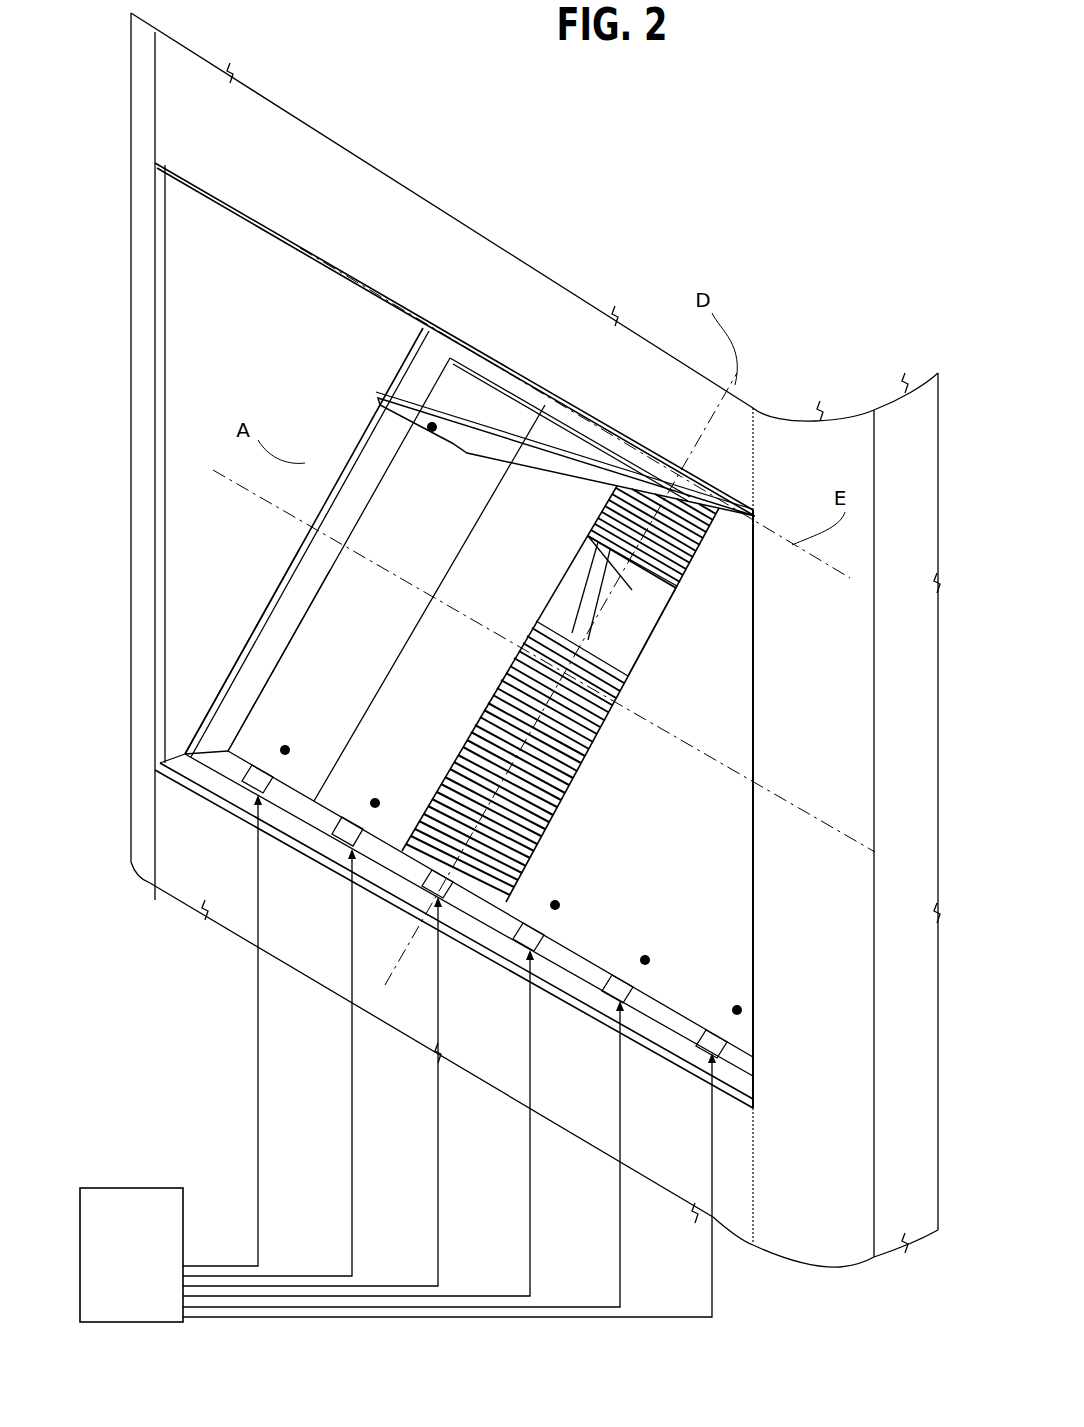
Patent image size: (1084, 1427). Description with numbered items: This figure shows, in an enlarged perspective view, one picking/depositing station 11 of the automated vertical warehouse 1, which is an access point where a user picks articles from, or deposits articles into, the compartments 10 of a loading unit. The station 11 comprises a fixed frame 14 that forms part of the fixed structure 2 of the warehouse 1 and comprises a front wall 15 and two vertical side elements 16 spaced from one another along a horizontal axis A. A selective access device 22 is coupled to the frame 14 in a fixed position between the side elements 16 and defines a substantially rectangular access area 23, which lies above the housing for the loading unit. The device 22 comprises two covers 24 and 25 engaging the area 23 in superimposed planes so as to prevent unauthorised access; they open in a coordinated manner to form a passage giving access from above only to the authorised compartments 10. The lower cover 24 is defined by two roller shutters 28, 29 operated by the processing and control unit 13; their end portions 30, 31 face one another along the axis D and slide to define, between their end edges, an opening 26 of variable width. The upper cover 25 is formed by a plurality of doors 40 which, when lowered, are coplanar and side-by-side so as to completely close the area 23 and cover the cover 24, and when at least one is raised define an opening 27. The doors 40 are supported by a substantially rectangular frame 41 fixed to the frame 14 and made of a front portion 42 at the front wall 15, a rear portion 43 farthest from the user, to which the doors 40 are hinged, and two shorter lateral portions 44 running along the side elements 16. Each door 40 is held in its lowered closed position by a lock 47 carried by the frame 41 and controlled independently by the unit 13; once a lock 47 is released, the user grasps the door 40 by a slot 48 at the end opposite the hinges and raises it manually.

The automated vertical warehouse 1 is at (499, 651).
The fixed structure 2 is at (495, 635).
The compartments 10 is at (692, 580).
The picking/depositing station 11 is at (404, 703).
The processing and control unit 13 is at (122, 1188).
The fixed frame 14 is at (106, 464).
The front wall 15 is at (182, 822).
The vertical side elements 16 is at (205, 292).
The selective access device 22 is at (196, 662).
The access area 23 is at (251, 554).
The cover 24 is at (562, 774).
The cover 25 is at (176, 651).
The opening 26 is at (537, 587).
The opening 27 is at (657, 668).
The roller shutter 28 is at (400, 828).
The roller shutter 29 is at (765, 540).
The end portion 30 is at (685, 624).
The end portion 31 is at (618, 558).
The doors 40 is at (477, 393).
The rectangular frame 41 is at (247, 541).
The front portion 42 is at (328, 862).
The rear portion 43 is at (620, 380).
The lateral portions 44 is at (290, 545).
The lock 47 is at (245, 772).
The slot 48 is at (550, 880).